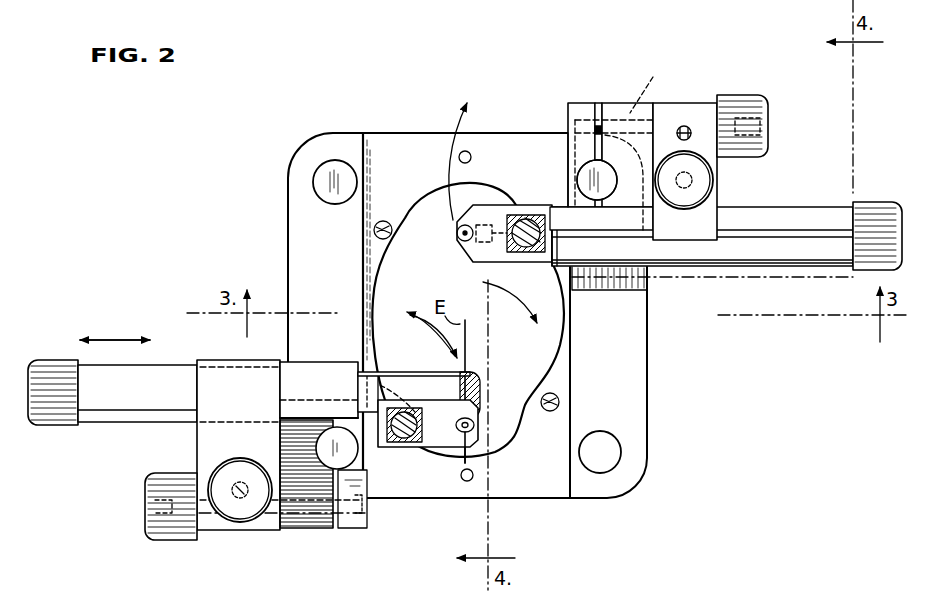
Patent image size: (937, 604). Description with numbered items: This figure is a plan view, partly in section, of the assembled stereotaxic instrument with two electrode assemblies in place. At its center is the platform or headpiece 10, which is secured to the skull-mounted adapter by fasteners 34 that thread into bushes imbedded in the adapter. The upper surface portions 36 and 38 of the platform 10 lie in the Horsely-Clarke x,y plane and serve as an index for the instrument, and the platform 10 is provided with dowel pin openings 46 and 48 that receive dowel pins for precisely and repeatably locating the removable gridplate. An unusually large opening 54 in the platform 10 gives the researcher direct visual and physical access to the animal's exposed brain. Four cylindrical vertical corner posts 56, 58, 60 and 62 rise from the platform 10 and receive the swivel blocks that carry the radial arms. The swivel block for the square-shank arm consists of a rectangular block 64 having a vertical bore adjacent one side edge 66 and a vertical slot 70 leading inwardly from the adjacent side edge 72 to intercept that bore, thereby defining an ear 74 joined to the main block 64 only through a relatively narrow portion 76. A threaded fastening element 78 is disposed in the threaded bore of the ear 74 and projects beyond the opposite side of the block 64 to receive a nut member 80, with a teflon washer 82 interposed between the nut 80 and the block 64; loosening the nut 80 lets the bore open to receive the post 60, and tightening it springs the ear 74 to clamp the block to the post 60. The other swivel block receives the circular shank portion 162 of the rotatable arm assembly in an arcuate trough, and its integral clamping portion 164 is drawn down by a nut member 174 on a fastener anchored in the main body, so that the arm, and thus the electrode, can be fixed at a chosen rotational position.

The platform or headpiece 10 is at (488, 315).
The fasteners 34 is at (383, 221).
The upper surface portion 36 is at (302, 248).
The upper surface portion 38 is at (632, 347).
The dowel pin opening 46 is at (465, 481).
The dowel pin opening 48 is at (470, 151).
The opening 54 is at (428, 203).
The vertical corner post 56 is at (345, 455).
The vertical corner post 58 is at (325, 179).
The vertical corner post 60 is at (608, 178).
The vertical corner post 62 is at (612, 447).
The swivel block 64 is at (640, 143).
The side edge 66 is at (567, 152).
The vertical slot 70 is at (597, 103).
The side edge 72 is at (623, 103).
The ear 74 is at (582, 108).
The narrow portion 76 is at (573, 187).
The threaded fastening element 78 is at (652, 82).
The nut member 80 is at (753, 97).
The teflon washer 82 is at (713, 100).
The shank portion 162 is at (120, 395).
The clamping portion 164 is at (210, 445).
The nut member 174 is at (238, 522).